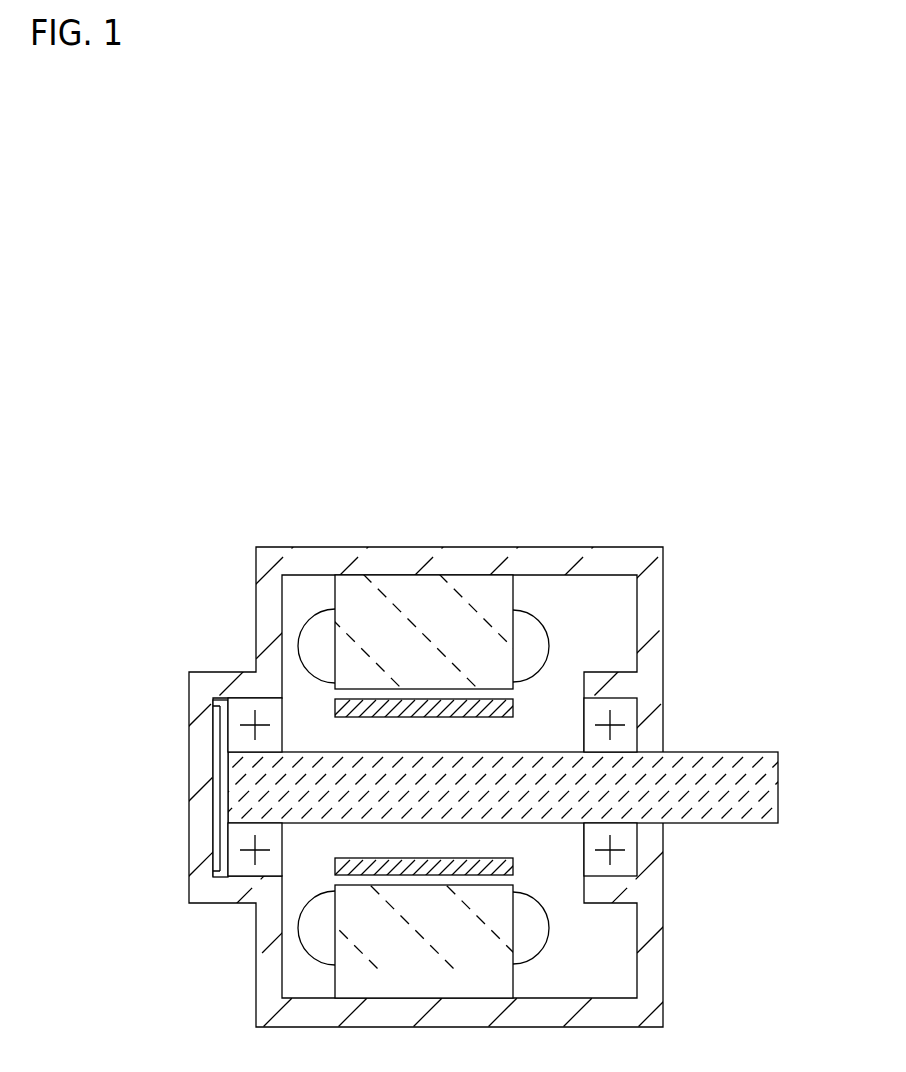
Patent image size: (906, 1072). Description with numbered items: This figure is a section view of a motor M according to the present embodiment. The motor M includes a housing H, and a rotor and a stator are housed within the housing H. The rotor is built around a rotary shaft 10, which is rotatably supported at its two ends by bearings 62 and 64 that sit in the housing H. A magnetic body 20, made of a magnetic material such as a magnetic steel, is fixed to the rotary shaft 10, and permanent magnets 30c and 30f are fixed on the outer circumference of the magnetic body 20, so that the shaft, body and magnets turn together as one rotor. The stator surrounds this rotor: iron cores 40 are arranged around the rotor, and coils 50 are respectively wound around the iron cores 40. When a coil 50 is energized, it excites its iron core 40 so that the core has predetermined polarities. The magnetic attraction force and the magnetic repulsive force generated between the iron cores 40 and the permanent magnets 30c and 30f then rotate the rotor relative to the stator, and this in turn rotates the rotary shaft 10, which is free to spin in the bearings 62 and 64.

The motor M is at (652, 507).
The housing H is at (468, 558).
The iron core 40 is at (393, 594).
The coil 50 is at (317, 623).
The magnetic body 20 is at (483, 845).
The rotary shaft 10 is at (753, 767).
The permanent magnet 30f is at (472, 707).
The permanent magnet 30c is at (343, 875).
The bearing 62 is at (265, 713).
The bearing 64 is at (620, 715).